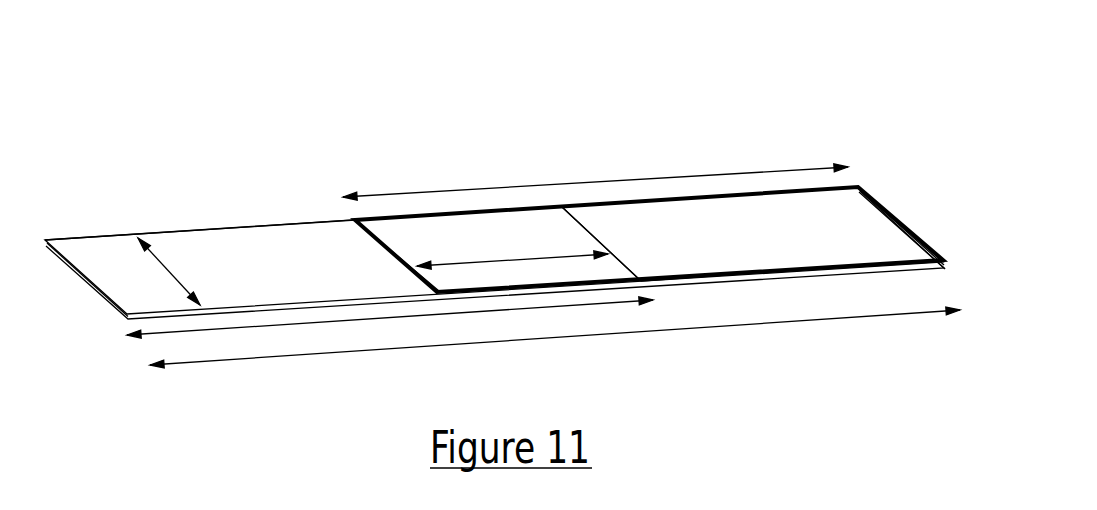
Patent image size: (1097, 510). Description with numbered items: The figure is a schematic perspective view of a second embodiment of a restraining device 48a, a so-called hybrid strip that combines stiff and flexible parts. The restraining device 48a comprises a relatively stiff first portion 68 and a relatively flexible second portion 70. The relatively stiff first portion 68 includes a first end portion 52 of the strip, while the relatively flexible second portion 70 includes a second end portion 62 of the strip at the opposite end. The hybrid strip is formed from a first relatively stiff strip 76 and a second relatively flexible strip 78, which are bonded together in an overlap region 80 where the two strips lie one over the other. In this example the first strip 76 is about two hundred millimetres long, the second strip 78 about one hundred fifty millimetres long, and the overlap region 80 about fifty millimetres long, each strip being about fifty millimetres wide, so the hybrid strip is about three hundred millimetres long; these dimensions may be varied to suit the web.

The restraining device 48a is at (222, 86).
The second end portion 62 is at (95, 243).
The relatively flexible second portion 70 is at (245, 204).
The second relatively flexible strip 78 is at (302, 276).
The relatively stiff first portion 68 is at (722, 153).
The overlap region 80 is at (450, 235).
The first relatively stiff strip 76 is at (783, 252).
The first end portion 52 is at (870, 212).